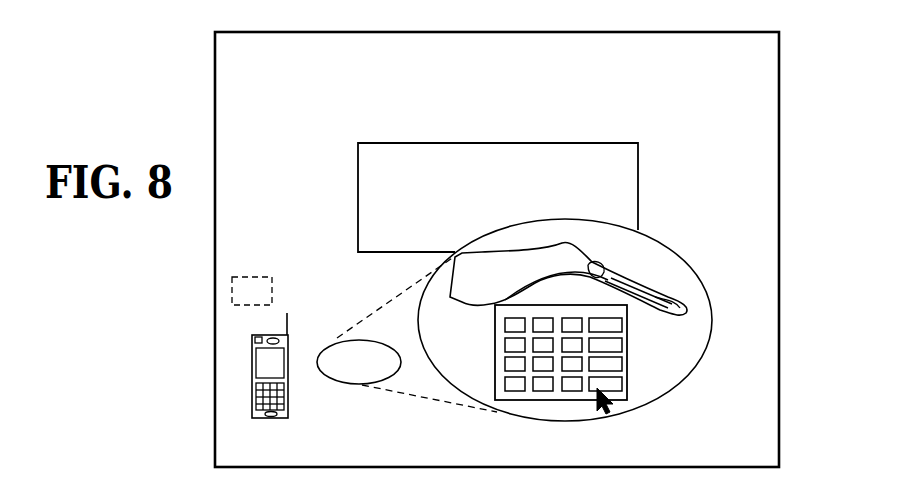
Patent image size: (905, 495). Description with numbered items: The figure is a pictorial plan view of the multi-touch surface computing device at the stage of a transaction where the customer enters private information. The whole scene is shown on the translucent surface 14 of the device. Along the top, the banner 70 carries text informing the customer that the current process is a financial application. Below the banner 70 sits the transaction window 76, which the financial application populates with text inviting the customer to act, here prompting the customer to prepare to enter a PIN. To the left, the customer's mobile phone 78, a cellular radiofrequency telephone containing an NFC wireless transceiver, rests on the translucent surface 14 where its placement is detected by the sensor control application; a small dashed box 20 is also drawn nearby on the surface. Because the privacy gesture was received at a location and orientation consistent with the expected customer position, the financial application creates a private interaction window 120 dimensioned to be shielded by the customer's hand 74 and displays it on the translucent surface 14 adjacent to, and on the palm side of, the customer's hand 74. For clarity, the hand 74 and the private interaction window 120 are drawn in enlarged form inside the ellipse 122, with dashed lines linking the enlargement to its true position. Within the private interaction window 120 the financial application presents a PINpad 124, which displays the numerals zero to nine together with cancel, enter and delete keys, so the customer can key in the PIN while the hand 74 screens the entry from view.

The translucent surface 14 is at (779, 325).
The wireless communication device indicator 20 is at (232, 297).
The banner 70 is at (648, 84).
The customer's hand 74 is at (640, 277).
The transaction window 76 is at (357, 200).
The mobile phone 78 is at (290, 415).
The private interaction window 120 is at (627, 352).
The ellipse 122 is at (695, 264).
The PINpad 124 is at (617, 412).